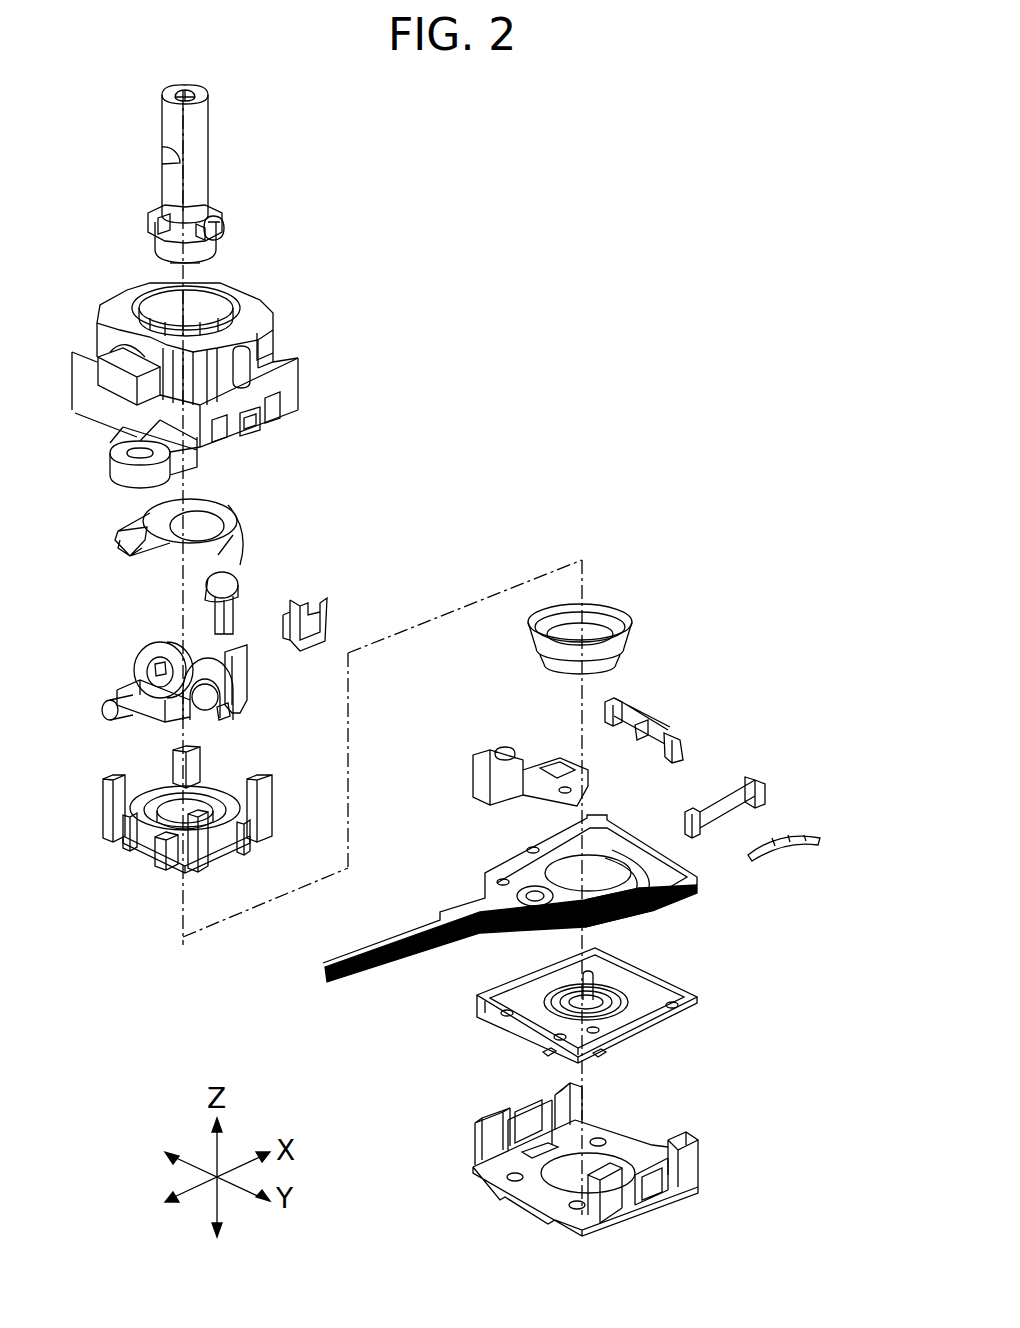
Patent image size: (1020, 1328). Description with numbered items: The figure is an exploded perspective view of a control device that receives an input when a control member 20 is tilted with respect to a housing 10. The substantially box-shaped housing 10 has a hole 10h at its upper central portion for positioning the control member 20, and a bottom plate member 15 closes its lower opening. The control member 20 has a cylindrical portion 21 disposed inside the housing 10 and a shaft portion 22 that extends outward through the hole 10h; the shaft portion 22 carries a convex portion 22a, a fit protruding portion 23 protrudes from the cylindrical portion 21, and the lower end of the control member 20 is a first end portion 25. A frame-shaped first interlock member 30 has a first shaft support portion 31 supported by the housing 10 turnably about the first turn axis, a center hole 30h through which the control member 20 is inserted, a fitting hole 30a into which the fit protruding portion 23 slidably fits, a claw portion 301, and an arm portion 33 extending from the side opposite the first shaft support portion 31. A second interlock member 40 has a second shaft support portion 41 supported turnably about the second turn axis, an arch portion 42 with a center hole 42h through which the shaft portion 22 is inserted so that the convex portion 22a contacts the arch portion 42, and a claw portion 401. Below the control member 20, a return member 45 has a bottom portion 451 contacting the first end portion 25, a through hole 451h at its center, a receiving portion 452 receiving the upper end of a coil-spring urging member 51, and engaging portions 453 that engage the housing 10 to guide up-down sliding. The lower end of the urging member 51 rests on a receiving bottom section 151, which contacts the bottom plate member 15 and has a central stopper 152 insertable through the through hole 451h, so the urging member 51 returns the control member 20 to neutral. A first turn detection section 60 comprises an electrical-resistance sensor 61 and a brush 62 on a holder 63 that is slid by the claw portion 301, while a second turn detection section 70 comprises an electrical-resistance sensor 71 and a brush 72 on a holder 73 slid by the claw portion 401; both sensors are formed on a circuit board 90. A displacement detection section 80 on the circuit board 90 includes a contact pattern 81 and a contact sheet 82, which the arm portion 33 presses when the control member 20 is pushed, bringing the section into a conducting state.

The housing 10 is at (268, 302).
The hole 10h is at (220, 304).
The bottom plate member 15 is at (692, 1165).
The control member 20 is at (208, 106).
The cylindrical portion 21 is at (160, 253).
The shaft portion 22 is at (198, 144).
The convex portion 22a is at (170, 181).
The fit protruding portion 23 is at (214, 240).
The first end portion 25 is at (176, 266).
The first interlock member 30 is at (160, 645).
The fitting hole 30a is at (208, 704).
The hole 30h is at (150, 672).
The first shaft support portion 31 is at (245, 681).
The arm portion 33 is at (105, 712).
The claw portion 301 is at (235, 712).
The second interlock member 40 is at (222, 503).
The second shaft support portion 41 is at (245, 590).
The arch portion 42 is at (140, 522).
The hole 42h is at (212, 530).
The claw portion 401 is at (228, 656).
The return member 45 is at (145, 846).
The bottom portion 451 is at (168, 800).
The through hole 451h is at (205, 820).
The receiving portion 452 is at (218, 850).
The engaging portions 453 is at (107, 832).
The urging member 51 is at (620, 625).
The first turn detection section 60 is at (737, 690).
The electrical-resistance sensor 61 is at (628, 830).
The brush 62 is at (670, 738).
The holder 63 is at (636, 700).
The second turn detection section 70 is at (815, 878).
The electrical-resistance sensor 71 is at (667, 888).
The brush 72 is at (785, 846).
The holder 73 is at (770, 792).
The displacement detection section 80 is at (413, 790).
The contact pattern 81 is at (535, 892).
The contact sheet 82 is at (520, 786).
The circuit board 90 is at (623, 908).
The receiving bottom section 151 is at (688, 1006).
The stopper 152 is at (605, 990).